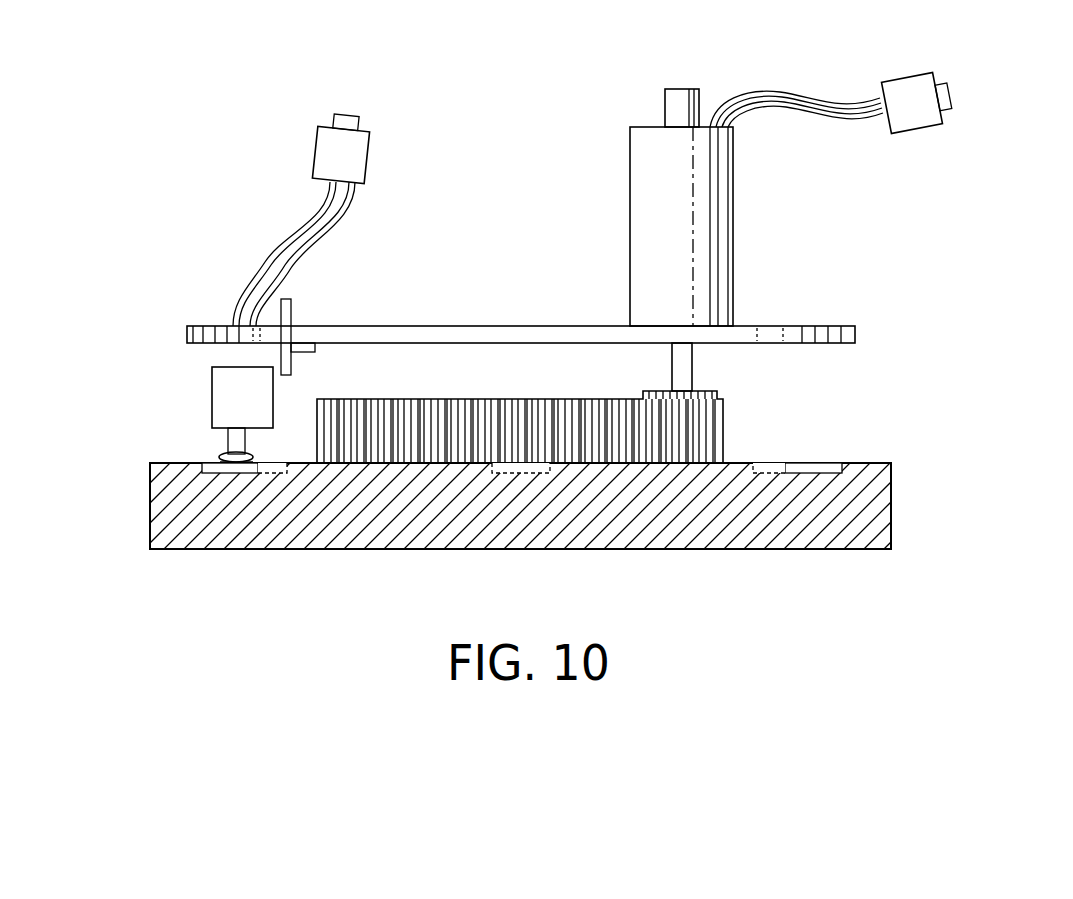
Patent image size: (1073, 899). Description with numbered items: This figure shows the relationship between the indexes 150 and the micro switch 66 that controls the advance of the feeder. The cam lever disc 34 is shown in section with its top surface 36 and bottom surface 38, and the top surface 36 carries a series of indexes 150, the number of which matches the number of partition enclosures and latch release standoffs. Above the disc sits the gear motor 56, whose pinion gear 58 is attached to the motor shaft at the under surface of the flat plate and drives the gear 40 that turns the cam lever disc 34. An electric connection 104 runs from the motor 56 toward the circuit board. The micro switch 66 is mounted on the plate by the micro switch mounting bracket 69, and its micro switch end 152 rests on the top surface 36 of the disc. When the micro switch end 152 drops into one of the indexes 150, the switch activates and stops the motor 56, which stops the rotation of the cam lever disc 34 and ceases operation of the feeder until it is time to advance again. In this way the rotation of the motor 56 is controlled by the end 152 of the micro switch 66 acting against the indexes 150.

The cam lever disc 34 is at (891, 498).
The top surface 36 is at (864, 463).
The bottom surface of base plate 38 is at (873, 549).
The finned heat sink block 40 is at (428, 445).
The gear motor 56 is at (695, 218).
The pinion gear 58 is at (692, 373).
The micro switch 66 is at (226, 400).
The micro switch mounting bracket 69 is at (291, 310).
The electric connection 104 is at (823, 105).
The index 150 is at (537, 466).
The micro switch end 152 is at (218, 452).